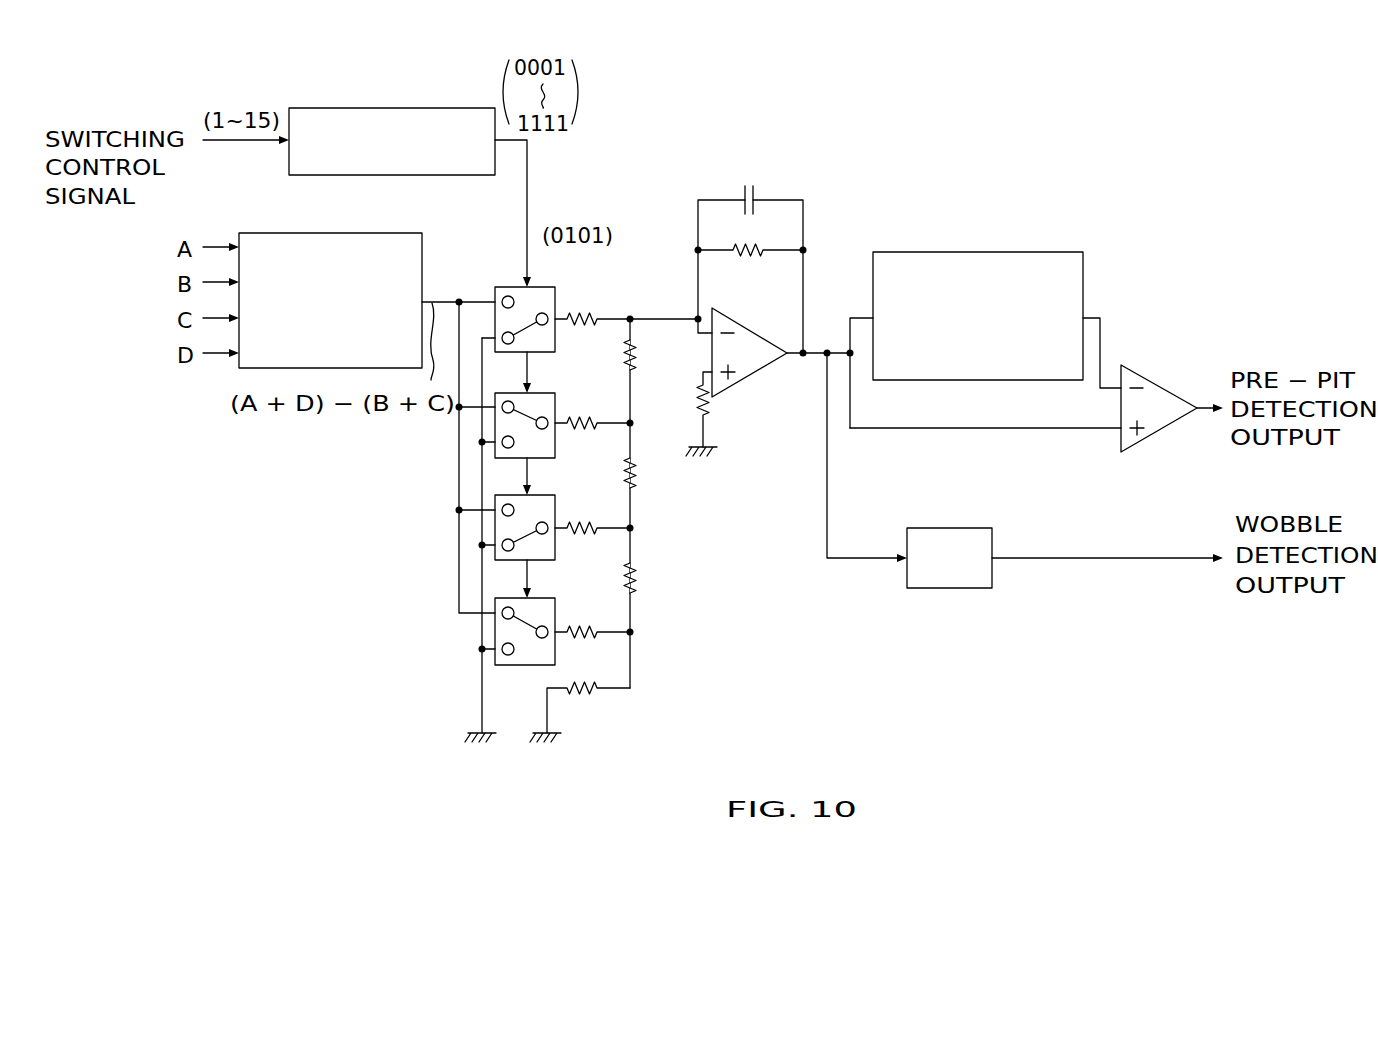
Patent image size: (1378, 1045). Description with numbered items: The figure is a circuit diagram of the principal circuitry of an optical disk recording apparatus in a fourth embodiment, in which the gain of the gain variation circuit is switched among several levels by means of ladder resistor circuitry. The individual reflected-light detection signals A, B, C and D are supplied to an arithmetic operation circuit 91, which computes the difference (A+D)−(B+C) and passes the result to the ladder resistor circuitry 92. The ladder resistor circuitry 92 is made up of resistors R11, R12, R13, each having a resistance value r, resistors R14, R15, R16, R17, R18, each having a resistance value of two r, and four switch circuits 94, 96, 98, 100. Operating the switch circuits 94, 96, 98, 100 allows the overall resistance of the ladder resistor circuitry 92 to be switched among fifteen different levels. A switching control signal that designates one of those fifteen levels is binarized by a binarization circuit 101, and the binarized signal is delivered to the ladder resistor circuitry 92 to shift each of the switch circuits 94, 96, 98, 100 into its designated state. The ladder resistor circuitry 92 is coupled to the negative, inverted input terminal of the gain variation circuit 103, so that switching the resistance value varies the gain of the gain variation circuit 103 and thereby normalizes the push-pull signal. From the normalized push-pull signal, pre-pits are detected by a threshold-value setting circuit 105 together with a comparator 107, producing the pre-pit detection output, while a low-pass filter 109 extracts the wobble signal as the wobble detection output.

The arithmetic operation circuit 91 is at (310, 233).
The ladder resistor circuitry 92 is at (578, 184).
The switch circuit 94 is at (540, 287).
The switch circuit 96 is at (540, 393).
The switch circuit 98 is at (540, 495).
The switch circuit 100 is at (540, 598).
The binarization circuit 101 is at (335, 108).
The gain variation circuit 103 is at (765, 178).
The threshold-value setting circuit 105 is at (1030, 252).
The comparator 107 is at (1168, 390).
The low-pass filter 109 is at (950, 588).
The resistor R11 is at (636, 352).
The resistor R12 is at (634, 462).
The resistor R13 is at (636, 568).
The resistor R14 is at (580, 304).
The resistor R15 is at (582, 408).
The resistor R16 is at (578, 521).
The resistor R17 is at (578, 625).
The resistor R18 is at (580, 684).